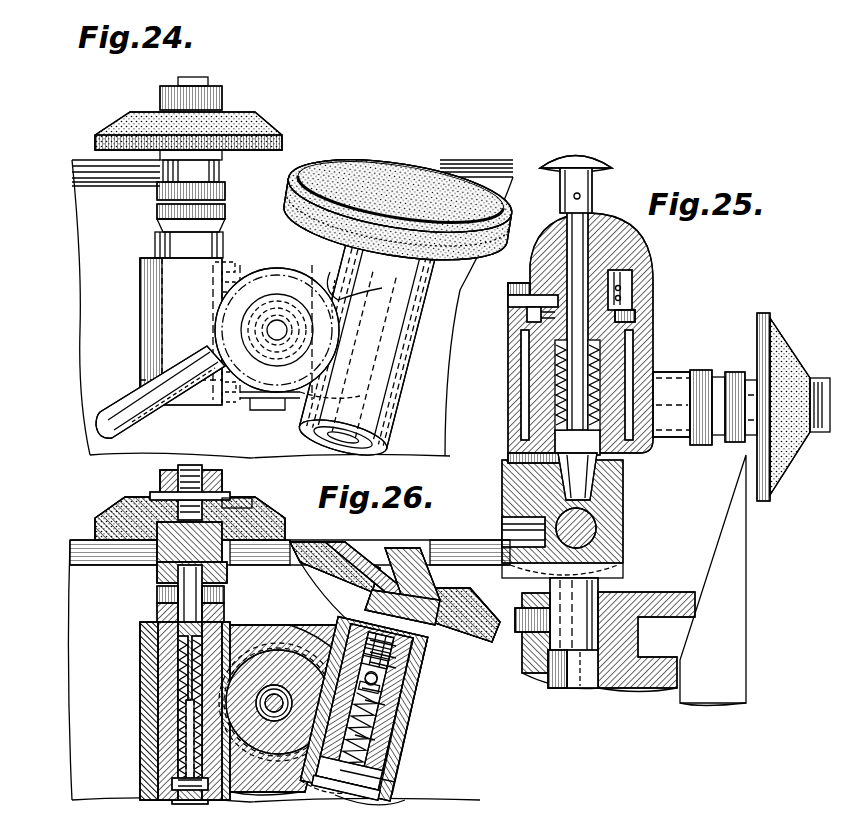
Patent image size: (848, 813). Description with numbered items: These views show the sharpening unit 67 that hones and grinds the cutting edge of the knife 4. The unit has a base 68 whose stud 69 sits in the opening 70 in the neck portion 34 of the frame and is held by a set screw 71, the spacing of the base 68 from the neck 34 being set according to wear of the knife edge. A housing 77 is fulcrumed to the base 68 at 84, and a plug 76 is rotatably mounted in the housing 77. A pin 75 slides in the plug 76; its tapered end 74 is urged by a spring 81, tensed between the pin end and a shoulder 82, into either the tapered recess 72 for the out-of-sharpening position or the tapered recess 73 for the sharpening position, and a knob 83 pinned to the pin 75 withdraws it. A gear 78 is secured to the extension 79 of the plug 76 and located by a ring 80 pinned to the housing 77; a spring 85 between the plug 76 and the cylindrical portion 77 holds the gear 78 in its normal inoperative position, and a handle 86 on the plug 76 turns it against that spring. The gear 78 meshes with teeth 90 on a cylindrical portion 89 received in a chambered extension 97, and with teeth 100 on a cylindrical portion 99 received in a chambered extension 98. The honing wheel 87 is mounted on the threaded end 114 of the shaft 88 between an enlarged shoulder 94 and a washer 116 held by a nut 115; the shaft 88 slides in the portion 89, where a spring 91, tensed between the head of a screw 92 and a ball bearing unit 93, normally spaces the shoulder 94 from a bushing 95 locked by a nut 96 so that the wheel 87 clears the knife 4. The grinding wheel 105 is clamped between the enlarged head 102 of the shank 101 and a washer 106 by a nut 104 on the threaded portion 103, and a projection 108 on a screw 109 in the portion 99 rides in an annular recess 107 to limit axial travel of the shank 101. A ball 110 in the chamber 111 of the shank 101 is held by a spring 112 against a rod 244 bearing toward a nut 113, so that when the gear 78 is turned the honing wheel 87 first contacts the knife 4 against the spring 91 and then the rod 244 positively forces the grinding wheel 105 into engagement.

In FIG. 24, the knife 4 is at (425, 165).
In FIG. 25, the knife 4 is at (748, 533).
In FIG. 26, the knife 4 is at (92, 540).
In FIG. 25, the neck portion 34 is at (666, 592).
In FIG. 24, the sharpening unit 67 is at (128, 302).
In FIG. 25, the sharpening unit 67 is at (748, 324).
In FIG. 25, the base 68 is at (625, 512).
In FIG. 25, the stud 69 is at (605, 580).
In FIG. 25, the opening 70 is at (592, 688).
In FIG. 25, the set screw 71 is at (558, 688).
In FIG. 25, the tapered recess 72 is at (502, 532).
In FIG. 25, the tapered recess 73 is at (605, 492).
In FIG. 25, the tapered end 74 is at (550, 463).
In FIG. 25, the pin 75 is at (625, 248).
In FIG. 26, the pin 75 is at (246, 660).
In FIG. 24, the plug 76 is at (272, 298).
In FIG. 25, the plug 76 is at (598, 212).
In FIG. 25, the housing 77 is at (652, 292).
In FIG. 26, the housing 77 is at (240, 780).
In FIG. 25, the gear 78 is at (655, 360).
In FIG. 26, the gear 78 is at (256, 645).
In FIG. 25, the extension 79 is at (568, 318).
In FIG. 25, the ring 80 is at (540, 300).
In FIG. 25, the spring 81 is at (560, 386).
In FIG. 26, the spring 81 is at (282, 685).
In FIG. 25, the shoulder 82 is at (640, 335).
In FIG. 24, the knob 83 is at (262, 316).
In FIG. 25, the knob 83 is at (590, 160).
In FIG. 25, the fulcrum 84 is at (600, 506).
In FIG. 25, the spring 85 is at (655, 284).
In FIG. 24, the handle 86 is at (106, 404).
In FIG. 24, the honing wheel 87 is at (235, 118).
In FIG. 25, the honing wheel 87 is at (785, 322).
In FIG. 26, the honing wheel 87 is at (125, 505).
In FIG. 26, the shaft 88 is at (186, 588).
In FIG. 24, the cylindrical portion 89 is at (155, 240).
In FIG. 25, the cylindrical portion 89 is at (700, 370).
In FIG. 26, the cylindrical portion 89 is at (158, 615).
In FIG. 24, the teeth 90 is at (238, 272).
In FIG. 26, the teeth 90 is at (200, 676).
In FIG. 26, the spring 91 is at (186, 700).
In FIG. 26, the screw 92 is at (172, 790).
In FIG. 26, the ball bearing unit 93 is at (160, 650).
In FIG. 24, the shoulder 94 is at (226, 176).
In FIG. 26, the shoulder 94 is at (160, 540).
In FIG. 24, the bushing 95 is at (166, 170).
In FIG. 25, the bushing 95 is at (742, 378).
In FIG. 26, the bushing 95 is at (158, 565).
In FIG. 24, the nut 96 is at (157, 208).
In FIG. 25, the nut 96 is at (720, 377).
In FIG. 26, the nut 96 is at (158, 598).
In FIG. 24, the chambered extension 97 is at (140, 272).
In FIG. 26, the chambered extension 97 is at (142, 724).
In FIG. 24, the chambered extension 98 is at (410, 312).
In FIG. 26, the chambered extension 98 is at (410, 770).
In FIG. 26, the cylindrical portion 99 is at (405, 750).
In FIG. 24, the teeth 100 is at (362, 396).
In FIG. 26, the teeth 100 is at (300, 785).
In FIG. 26, the shank 101 is at (418, 704).
In FIG. 26, the enlarged head 102 is at (396, 643).
In FIG. 26, the threaded portion 103 is at (386, 550).
In FIG. 26, the nut 104 is at (425, 560).
In FIG. 24, the grinding wheel 105 is at (302, 165).
In FIG. 26, the grinding wheel 105 is at (296, 542).
In FIG. 26, the washer 106 is at (352, 566).
In FIG. 26, the annular recess 107 is at (396, 655).
In FIG. 26, the projection 108 is at (396, 665).
In FIG. 26, the screw 109 is at (380, 681).
In FIG. 26, the ball 110 is at (384, 698).
In FIG. 26, the chamber 111 is at (380, 738).
In FIG. 26, the spring 112 is at (396, 778).
In FIG. 26, the nut 113 is at (385, 802).
In FIG. 24, the threaded end 114 is at (205, 82).
In FIG. 26, the threaded end 114 is at (138, 520).
In FIG. 24, the nut 115 is at (176, 84).
In FIG. 26, the nut 115 is at (222, 482).
In FIG. 26, the washer 116 is at (225, 500).
In FIG. 26, the rod 244 is at (388, 712).